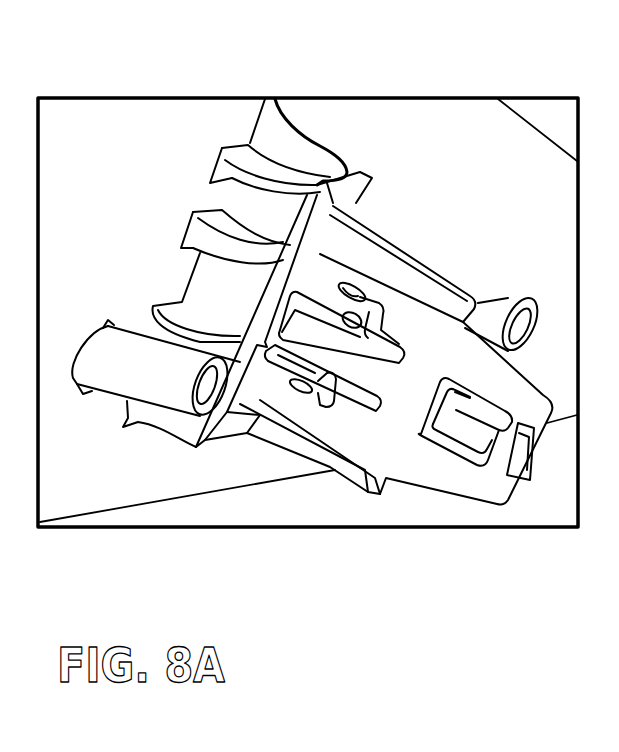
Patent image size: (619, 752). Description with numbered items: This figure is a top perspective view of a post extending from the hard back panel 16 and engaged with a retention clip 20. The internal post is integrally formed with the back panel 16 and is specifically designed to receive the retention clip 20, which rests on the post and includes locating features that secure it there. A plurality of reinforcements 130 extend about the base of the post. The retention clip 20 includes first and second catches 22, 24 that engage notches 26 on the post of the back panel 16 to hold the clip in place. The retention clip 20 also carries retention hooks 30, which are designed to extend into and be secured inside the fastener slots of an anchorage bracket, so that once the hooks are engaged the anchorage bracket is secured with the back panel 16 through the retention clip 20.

The back panel 16 is at (435, 169).
The retention clip 20 is at (409, 477).
The first catch 22 is at (350, 290).
The second catch 24 is at (308, 387).
The notch 26 is at (358, 272).
The retention hook 30 is at (485, 407).
The reinforcement 130 is at (322, 142).